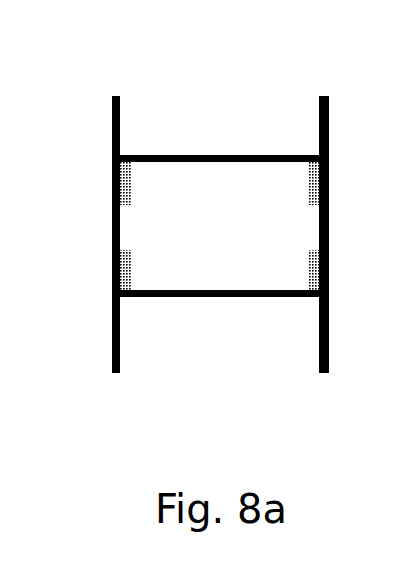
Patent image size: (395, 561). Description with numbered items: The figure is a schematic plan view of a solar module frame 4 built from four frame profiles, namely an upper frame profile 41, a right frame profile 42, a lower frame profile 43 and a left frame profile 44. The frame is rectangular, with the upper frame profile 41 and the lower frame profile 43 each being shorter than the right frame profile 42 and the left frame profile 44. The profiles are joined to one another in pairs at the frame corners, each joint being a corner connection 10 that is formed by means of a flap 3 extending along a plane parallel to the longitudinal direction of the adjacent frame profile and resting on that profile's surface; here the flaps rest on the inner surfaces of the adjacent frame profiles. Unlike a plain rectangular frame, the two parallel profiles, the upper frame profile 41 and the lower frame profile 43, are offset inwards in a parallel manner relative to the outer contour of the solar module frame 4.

The solar module frame 4 is at (274, 70).
The flap 3 is at (133, 165).
The corner connection 10 is at (104, 165).
The upper frame profile 41 is at (198, 155).
The right frame profile 42 is at (329, 362).
The lower frame profile 43 is at (193, 297).
The left frame profile 44 is at (113, 347).